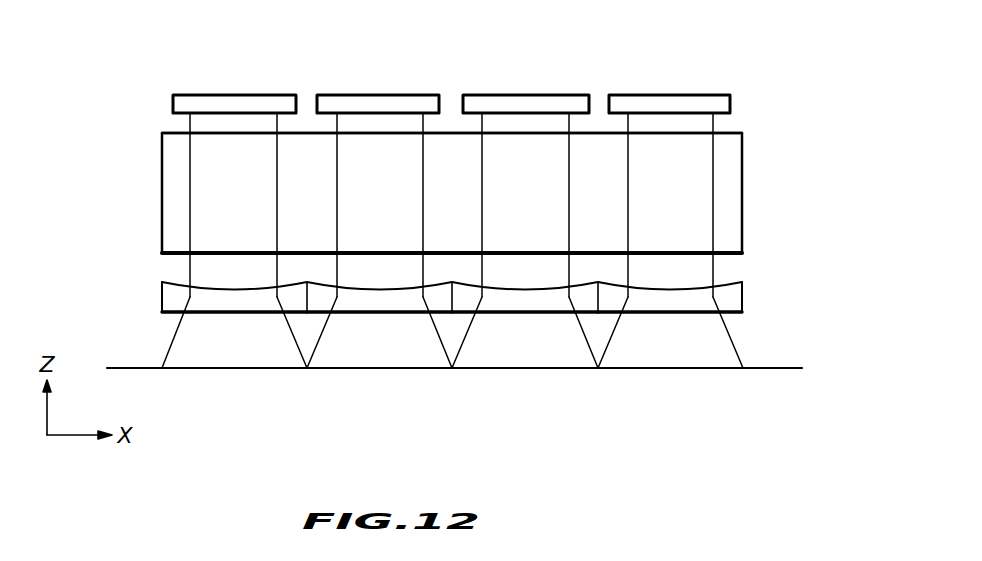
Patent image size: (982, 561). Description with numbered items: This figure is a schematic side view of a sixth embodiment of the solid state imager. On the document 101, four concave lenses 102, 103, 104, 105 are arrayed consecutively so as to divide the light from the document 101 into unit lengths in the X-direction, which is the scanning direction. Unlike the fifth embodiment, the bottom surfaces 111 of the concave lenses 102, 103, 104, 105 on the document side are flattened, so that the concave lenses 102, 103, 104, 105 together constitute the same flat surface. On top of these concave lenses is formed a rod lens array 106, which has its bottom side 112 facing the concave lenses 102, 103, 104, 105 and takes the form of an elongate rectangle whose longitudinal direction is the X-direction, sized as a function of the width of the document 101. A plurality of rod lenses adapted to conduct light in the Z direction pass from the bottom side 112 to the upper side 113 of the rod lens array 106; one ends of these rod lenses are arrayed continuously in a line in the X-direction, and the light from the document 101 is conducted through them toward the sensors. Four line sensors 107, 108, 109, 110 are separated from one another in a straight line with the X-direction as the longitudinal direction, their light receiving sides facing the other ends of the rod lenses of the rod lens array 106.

The document 101 is at (782, 367).
The concave lens 102 is at (167, 300).
The concave lens 103 is at (388, 303).
The concave lens 104 is at (538, 303).
The concave lens 105 is at (678, 303).
The rod lens array 106 is at (732, 178).
The line sensor 107 is at (225, 102).
The line sensor 108 is at (376, 102).
The line sensor 109 is at (527, 102).
The line sensor 110 is at (663, 102).
The bottom surface 111 is at (745, 318).
The bottom side 112 is at (170, 255).
The upper side 113 is at (164, 133).